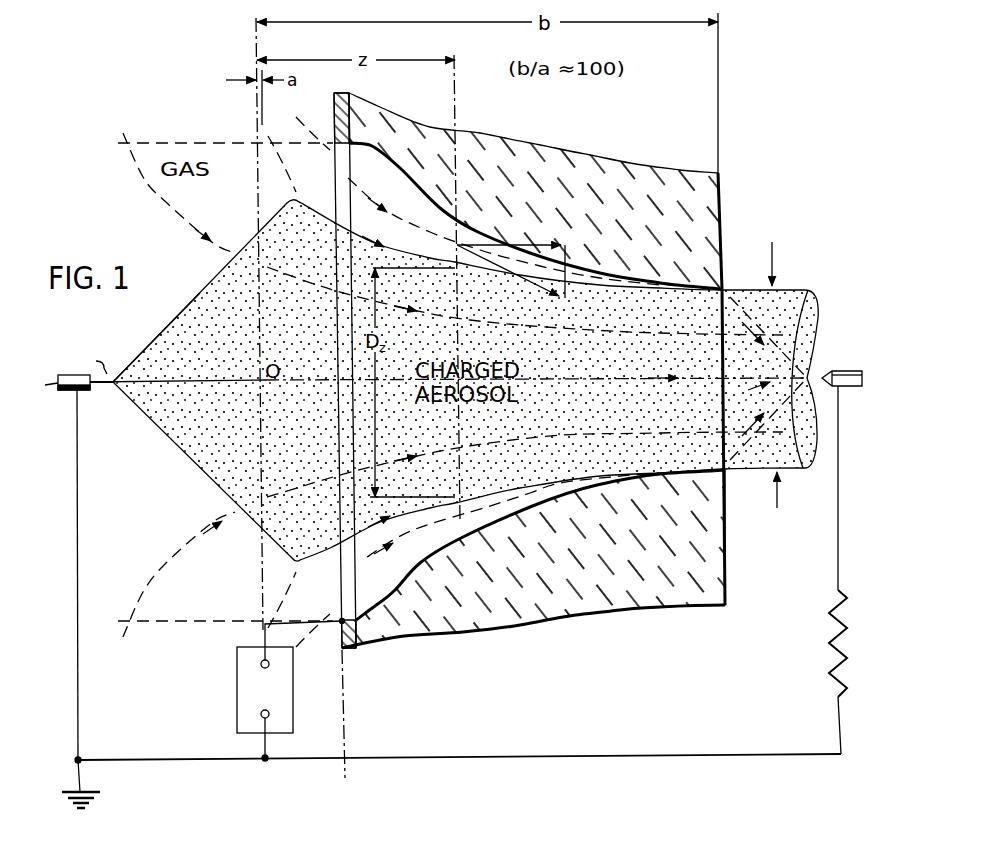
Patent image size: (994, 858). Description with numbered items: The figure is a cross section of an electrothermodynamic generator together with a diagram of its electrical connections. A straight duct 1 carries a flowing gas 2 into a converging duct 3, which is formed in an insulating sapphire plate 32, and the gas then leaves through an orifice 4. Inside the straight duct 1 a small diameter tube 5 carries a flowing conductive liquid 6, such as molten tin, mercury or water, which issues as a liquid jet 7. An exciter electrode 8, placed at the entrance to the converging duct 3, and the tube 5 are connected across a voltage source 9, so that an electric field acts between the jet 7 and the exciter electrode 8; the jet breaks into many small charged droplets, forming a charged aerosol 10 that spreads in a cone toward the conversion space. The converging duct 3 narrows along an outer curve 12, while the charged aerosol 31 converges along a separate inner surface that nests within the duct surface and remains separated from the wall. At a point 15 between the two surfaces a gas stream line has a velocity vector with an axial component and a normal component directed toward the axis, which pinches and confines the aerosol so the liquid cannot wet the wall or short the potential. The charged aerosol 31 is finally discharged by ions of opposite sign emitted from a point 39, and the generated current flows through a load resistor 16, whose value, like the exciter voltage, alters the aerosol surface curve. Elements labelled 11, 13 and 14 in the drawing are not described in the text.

The straight duct 1 is at (350, 158).
The flowing gas 2 is at (198, 224).
The converging duct 3 is at (402, 191).
The orifice 4 is at (727, 286).
The small diameter tube 5 is at (76, 391).
The flowing conductive liquid 6 is at (56, 392).
The liquid jet 7 is at (104, 392).
The exciter electrode 8 is at (350, 652).
The voltage source 9 is at (294, 678).
The charged aerosol 10 is at (207, 472).
The aerosol cone boundary 11 is at (185, 452).
The outer curve 12 is at (512, 510).
The lower flow streamline 13 is at (563, 481).
The ion crossover region 14 is at (780, 345).
The point 15 is at (460, 240).
The load resistor 16 is at (832, 635).
The charged aerosol 31 is at (641, 368).
The sapphire plate 32 is at (722, 185).
The point 39 is at (848, 388).